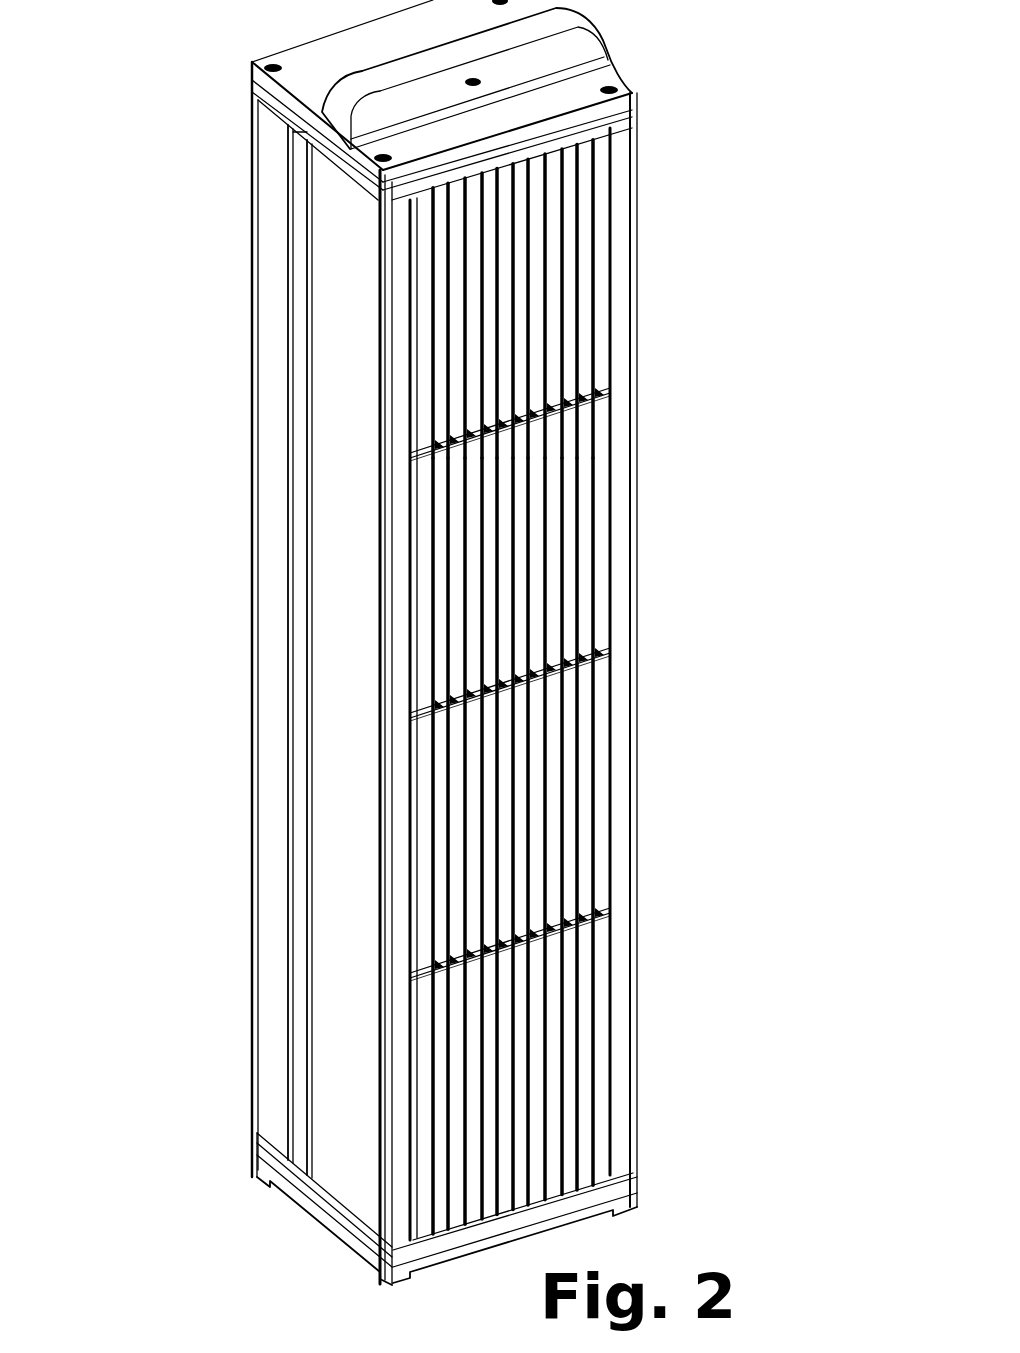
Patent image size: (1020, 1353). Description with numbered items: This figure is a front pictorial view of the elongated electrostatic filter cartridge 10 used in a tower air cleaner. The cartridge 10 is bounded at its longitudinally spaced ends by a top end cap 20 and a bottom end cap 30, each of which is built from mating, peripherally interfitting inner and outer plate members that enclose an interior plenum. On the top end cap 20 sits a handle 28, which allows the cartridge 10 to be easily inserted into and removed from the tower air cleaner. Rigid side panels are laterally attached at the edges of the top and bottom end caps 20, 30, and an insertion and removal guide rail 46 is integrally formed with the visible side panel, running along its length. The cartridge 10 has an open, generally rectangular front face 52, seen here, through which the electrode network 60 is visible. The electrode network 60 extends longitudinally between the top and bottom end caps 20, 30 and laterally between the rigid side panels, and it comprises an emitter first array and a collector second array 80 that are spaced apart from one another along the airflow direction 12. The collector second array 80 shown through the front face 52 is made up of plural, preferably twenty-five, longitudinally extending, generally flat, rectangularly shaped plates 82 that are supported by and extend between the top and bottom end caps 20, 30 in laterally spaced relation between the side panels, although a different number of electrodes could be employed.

The filter cartridge 10 is at (226, 470).
The airflow direction 12 is at (208, 312).
The top end cap 20 is at (616, 46).
The handle 28 is at (350, 88).
The bottom end cap 30 is at (290, 1210).
The guide rail 46 is at (300, 715).
The front face 52 is at (657, 650).
The electrode network 60 is at (507, 531).
The collector second array 80 is at (524, 770).
The plates 82 is at (565, 255).